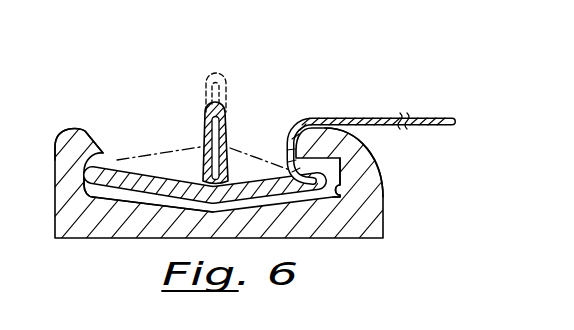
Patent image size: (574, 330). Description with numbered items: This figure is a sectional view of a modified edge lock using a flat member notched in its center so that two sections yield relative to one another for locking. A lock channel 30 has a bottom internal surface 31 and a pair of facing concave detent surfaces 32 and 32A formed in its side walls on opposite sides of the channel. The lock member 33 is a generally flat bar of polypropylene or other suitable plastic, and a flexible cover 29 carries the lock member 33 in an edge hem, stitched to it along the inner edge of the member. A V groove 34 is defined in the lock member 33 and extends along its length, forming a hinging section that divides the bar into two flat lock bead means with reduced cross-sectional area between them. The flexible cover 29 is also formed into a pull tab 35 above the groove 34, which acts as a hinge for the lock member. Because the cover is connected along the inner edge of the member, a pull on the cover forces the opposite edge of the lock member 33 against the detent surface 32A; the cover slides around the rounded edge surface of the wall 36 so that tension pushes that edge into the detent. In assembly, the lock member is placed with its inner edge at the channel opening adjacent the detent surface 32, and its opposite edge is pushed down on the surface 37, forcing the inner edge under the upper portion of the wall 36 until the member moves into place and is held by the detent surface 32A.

The flexible cover 29 is at (363, 117).
The lock channel 30 is at (326, 245).
The bottom internal surface 31 is at (131, 198).
The detent surface 32 is at (340, 193).
The detent surface 32A is at (88, 195).
The lock member 33 is at (257, 187).
The V groove 34 is at (204, 167).
The pull tab 35 is at (229, 124).
The wall 36 is at (363, 163).
The surface 37 is at (93, 140).